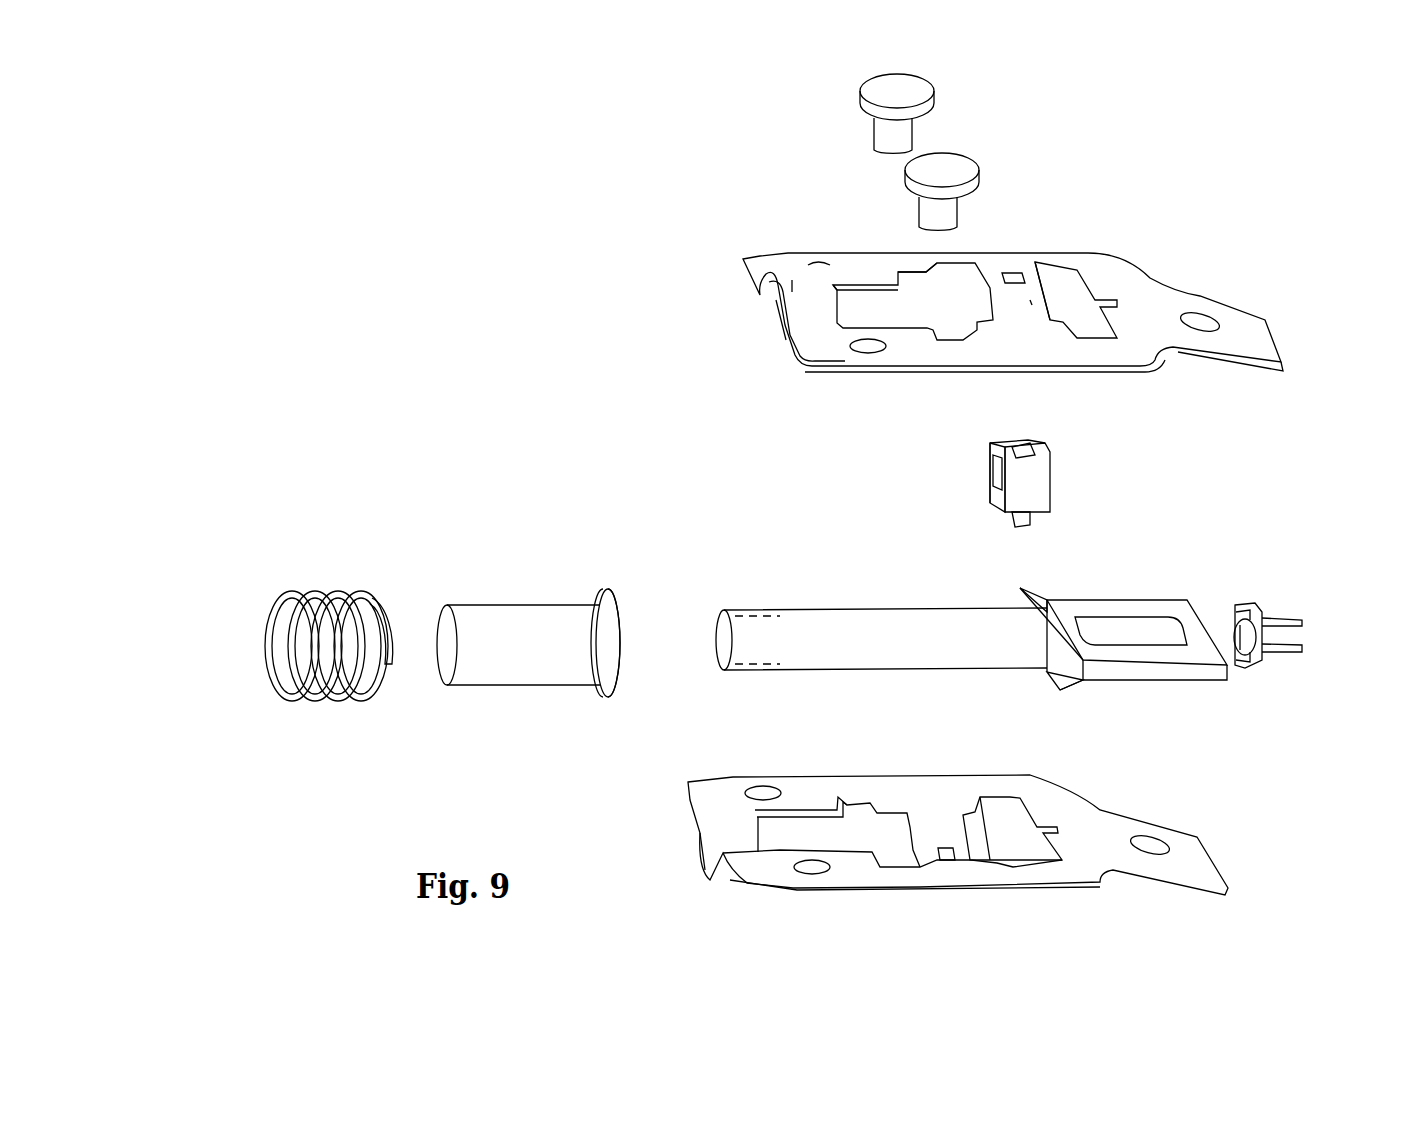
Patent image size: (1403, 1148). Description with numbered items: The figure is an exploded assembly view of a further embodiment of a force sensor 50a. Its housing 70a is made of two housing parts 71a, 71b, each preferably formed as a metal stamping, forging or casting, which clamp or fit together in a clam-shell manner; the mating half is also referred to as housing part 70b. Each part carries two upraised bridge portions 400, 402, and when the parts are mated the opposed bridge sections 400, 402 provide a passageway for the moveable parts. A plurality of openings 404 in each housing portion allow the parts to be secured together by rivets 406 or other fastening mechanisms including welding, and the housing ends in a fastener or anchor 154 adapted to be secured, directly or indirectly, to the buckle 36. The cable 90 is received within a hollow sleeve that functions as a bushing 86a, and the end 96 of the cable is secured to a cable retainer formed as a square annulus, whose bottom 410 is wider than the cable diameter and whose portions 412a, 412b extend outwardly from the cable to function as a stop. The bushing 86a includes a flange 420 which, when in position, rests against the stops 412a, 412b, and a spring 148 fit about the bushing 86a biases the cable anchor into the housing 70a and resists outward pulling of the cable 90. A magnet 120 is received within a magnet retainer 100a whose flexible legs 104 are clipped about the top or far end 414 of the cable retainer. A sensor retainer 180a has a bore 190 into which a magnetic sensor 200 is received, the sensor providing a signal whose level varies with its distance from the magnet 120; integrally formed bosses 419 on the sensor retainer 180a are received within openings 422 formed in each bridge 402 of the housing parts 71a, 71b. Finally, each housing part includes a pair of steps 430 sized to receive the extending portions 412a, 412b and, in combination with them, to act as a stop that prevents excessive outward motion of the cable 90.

The buckle 36 is at (1203, 325).
The force sensor 50a is at (742, 256).
The housing 70a is at (722, 294).
The housing part 70b is at (677, 791).
The housing part 71a is at (778, 342).
The housing part 71b is at (710, 886).
The bushing 86a is at (481, 601).
The rod 90 is at (777, 606).
The rod end 96 is at (757, 675).
The magnet retainer 100a is at (1276, 599).
The flexible legs 104 is at (1288, 620).
The magnet 120 is at (1237, 647).
The spring 148 is at (315, 583).
The anchor 154 is at (1250, 330).
The sensor retainer 180a is at (1040, 481).
The bore 190 is at (989, 493).
The magnetic sensor 200 is at (995, 481).
The bridge portion 400 is at (792, 290).
The bridge portion 402 is at (1030, 305).
The openings 404 is at (826, 265).
The rivets 406 is at (972, 157).
The bottom of the retainer 410 is at (1040, 598).
The extending portion 412a is at (1020, 602).
The extending portion 412b is at (1053, 674).
The far end of the cable retainer 414 is at (1190, 620).
The bosses 419 is at (1020, 445).
The flange 420 is at (597, 598).
The openings 422 is at (1012, 276).
The steps 430 is at (905, 268).